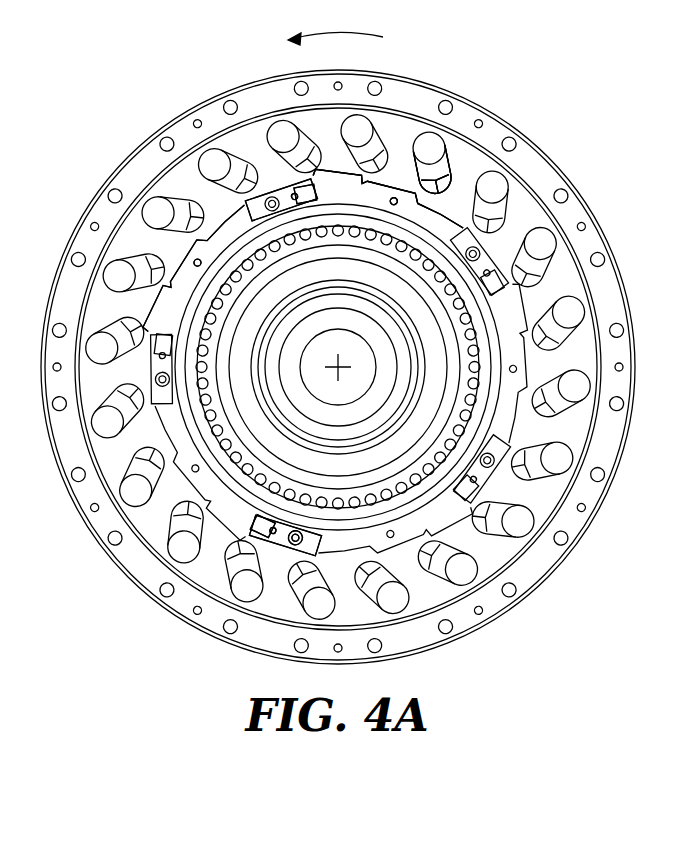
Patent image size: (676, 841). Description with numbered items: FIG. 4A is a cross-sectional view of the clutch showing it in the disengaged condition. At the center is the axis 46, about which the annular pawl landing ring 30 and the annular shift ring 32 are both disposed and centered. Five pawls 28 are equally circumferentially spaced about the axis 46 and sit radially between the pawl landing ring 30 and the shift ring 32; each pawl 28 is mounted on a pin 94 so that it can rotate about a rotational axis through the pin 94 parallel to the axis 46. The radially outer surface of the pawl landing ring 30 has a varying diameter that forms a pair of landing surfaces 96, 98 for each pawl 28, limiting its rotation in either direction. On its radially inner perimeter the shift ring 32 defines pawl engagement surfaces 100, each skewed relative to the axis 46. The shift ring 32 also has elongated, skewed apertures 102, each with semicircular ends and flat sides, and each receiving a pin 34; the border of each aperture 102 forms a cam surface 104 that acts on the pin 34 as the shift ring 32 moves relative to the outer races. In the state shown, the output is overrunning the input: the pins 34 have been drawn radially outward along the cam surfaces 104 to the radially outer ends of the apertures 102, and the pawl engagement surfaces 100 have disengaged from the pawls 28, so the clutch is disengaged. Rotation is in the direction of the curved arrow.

The pawl 28 is at (320, 545).
The pawl landing ring 30 is at (182, 287).
The shift ring 32 is at (238, 146).
The pin 34 is at (425, 140).
The axis 46 is at (337, 368).
The pin 94 is at (293, 545).
The landing surface 96 is at (225, 225).
The landing surface 98 is at (325, 192).
The pawl engagement surface 100 is at (377, 173).
The aperture 102 is at (442, 175).
The cam surface 104 is at (435, 180).